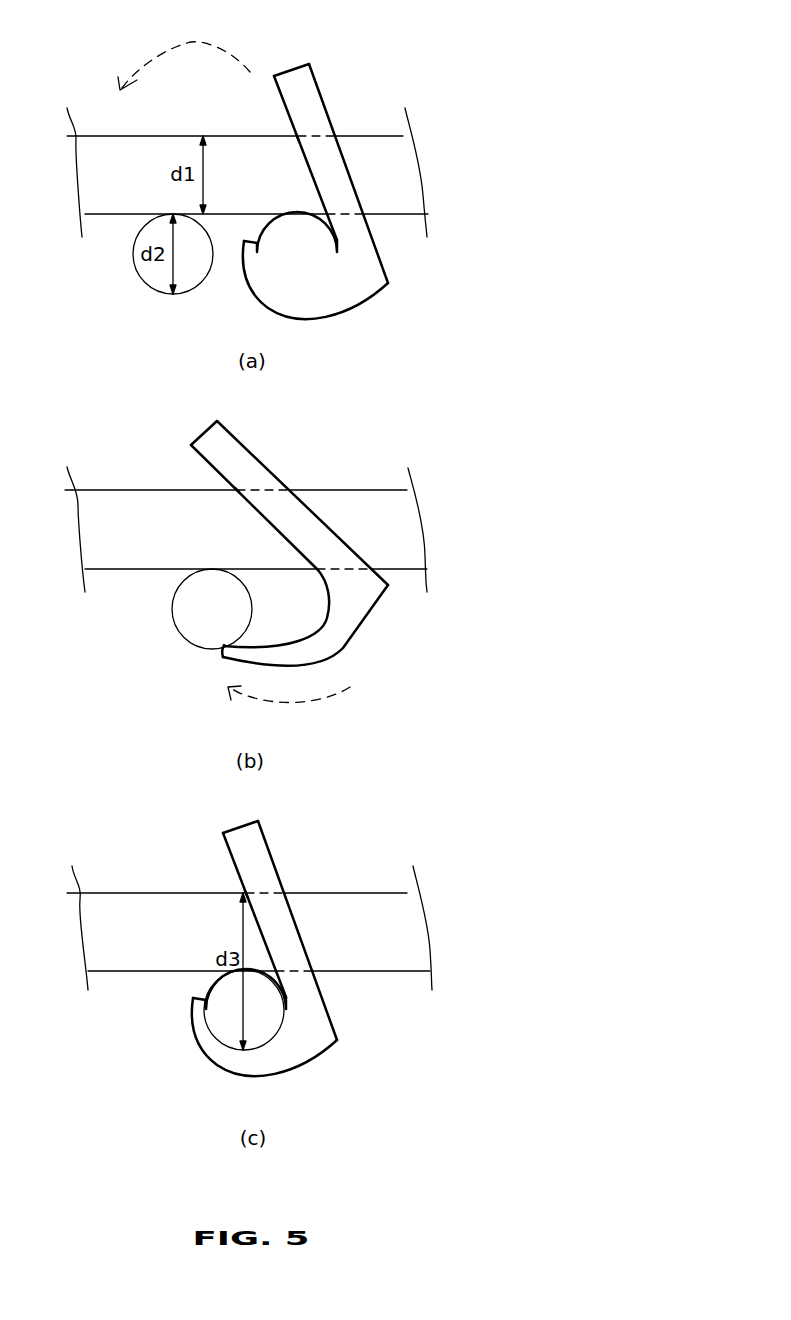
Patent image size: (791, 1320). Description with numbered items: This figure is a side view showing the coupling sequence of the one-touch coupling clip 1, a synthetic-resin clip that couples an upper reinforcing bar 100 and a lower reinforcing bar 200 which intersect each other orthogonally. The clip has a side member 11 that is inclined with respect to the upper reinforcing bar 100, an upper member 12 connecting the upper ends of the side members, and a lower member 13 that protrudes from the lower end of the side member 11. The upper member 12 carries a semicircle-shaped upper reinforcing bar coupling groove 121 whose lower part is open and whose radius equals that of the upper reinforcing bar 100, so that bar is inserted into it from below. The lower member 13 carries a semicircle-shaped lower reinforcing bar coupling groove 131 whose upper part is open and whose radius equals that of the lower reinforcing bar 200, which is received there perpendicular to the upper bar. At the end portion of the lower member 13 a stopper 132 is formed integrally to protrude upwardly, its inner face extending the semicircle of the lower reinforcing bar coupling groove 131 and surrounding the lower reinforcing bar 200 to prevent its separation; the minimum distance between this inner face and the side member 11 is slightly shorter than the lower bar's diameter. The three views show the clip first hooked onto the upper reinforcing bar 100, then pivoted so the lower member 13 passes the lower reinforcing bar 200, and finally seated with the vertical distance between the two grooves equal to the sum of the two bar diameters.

The one-touch coupling clip 1 is at (285, 555).
The upper reinforcing bar 100 is at (360, 136).
The side member 11 is at (360, 205).
The upper member 12 is at (292, 69).
The upper reinforcing bar coupling groove 121 is at (297, 139).
The lower member 13 is at (285, 645).
The lower reinforcing bar coupling groove 131 is at (327, 283).
The stopper 132 is at (252, 240).
The lower reinforcing bar 200 is at (137, 271).